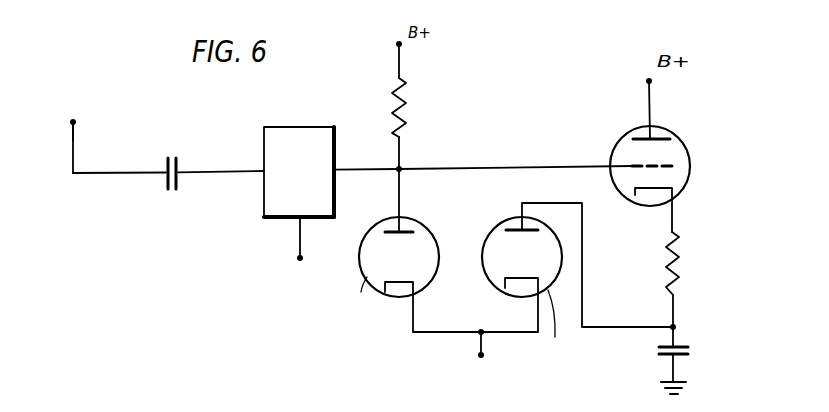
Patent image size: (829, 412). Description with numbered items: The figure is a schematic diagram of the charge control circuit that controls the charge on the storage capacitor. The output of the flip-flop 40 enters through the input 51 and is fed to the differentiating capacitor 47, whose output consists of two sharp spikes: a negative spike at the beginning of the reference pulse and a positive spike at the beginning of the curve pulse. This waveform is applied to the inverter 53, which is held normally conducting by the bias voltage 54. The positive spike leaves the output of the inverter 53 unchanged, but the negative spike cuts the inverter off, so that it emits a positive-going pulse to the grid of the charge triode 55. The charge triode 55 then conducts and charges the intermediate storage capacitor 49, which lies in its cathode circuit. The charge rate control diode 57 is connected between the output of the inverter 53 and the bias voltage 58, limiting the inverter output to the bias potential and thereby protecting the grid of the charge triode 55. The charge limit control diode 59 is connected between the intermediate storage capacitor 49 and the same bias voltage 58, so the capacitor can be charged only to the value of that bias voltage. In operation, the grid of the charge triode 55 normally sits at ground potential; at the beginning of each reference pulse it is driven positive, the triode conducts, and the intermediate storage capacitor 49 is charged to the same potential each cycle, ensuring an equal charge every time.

The flip-flop 40 is at (88, 122).
The input 51 is at (70, 128).
The differentiating capacitor 47 is at (180, 158).
The inverter 53 is at (300, 201).
The bias voltage 54 is at (298, 256).
The charge rate control diode 57 is at (440, 212).
The charge limit control diode 59 is at (507, 220).
The bias voltage 58 is at (480, 356).
The charge triode 55 is at (692, 156).
The intermediate storage capacitor 49 is at (683, 347).